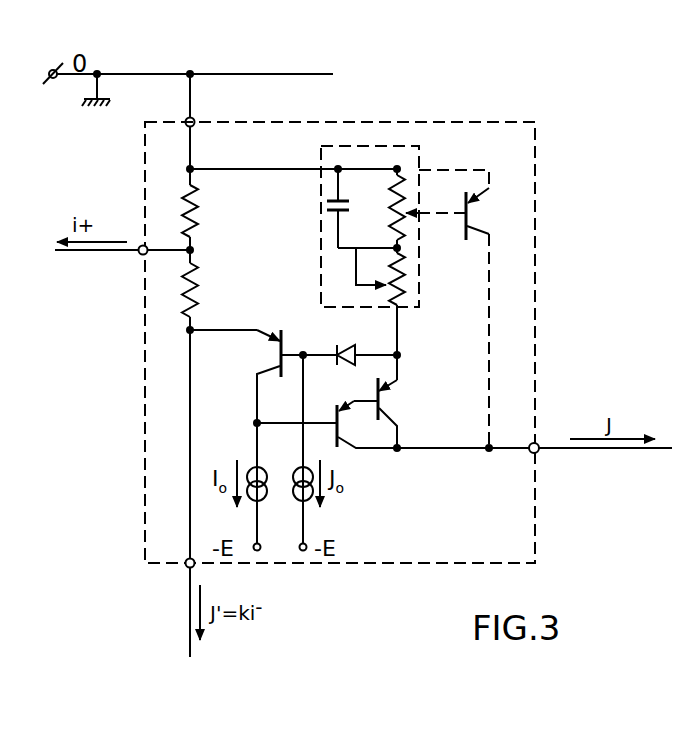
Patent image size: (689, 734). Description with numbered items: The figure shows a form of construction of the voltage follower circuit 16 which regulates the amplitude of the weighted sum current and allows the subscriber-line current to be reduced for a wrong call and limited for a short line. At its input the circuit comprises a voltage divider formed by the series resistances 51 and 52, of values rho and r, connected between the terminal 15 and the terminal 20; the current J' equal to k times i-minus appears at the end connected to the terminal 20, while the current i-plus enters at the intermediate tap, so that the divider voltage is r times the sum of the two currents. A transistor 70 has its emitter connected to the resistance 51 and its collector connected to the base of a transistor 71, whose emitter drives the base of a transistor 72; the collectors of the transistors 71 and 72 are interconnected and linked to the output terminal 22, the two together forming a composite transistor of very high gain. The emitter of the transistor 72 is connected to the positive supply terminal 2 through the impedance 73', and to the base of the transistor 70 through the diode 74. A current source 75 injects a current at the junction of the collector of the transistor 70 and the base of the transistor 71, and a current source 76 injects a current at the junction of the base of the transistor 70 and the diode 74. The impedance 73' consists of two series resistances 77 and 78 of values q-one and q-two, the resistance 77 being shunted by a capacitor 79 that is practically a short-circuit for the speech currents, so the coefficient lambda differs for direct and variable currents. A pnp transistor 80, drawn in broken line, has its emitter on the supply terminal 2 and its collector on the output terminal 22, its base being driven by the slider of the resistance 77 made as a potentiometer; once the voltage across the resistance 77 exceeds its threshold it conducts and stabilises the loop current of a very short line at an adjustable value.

The positive supply terminal 2 is at (53, 89).
The terminal 15 is at (193, 117).
The voltage follower circuit 16 is at (358, 121).
The terminal 20 is at (187, 569).
The output terminal 22 is at (537, 453).
The resistance 51 is at (186, 284).
The resistance 52 is at (186, 212).
The transistor 70 is at (275, 356).
The transistor 71 is at (341, 423).
The transistor 72 is at (390, 400).
The impedance 73' is at (344, 226).
The diode 74 is at (367, 341).
The current source 75 is at (253, 502).
The current source 76 is at (309, 502).
The resistance 77 is at (410, 212).
The resistance 78 is at (410, 274).
The capacitor 79 is at (330, 193).
The transistor 80 is at (478, 219).